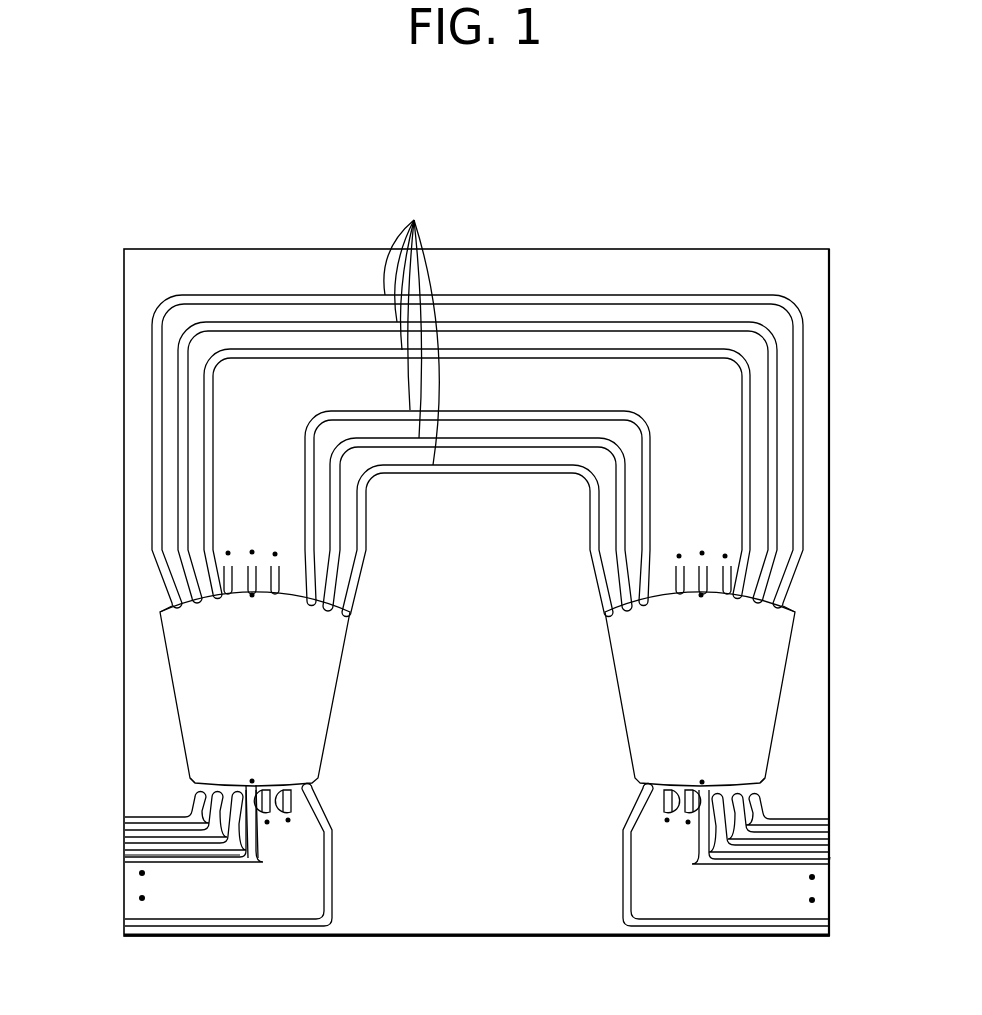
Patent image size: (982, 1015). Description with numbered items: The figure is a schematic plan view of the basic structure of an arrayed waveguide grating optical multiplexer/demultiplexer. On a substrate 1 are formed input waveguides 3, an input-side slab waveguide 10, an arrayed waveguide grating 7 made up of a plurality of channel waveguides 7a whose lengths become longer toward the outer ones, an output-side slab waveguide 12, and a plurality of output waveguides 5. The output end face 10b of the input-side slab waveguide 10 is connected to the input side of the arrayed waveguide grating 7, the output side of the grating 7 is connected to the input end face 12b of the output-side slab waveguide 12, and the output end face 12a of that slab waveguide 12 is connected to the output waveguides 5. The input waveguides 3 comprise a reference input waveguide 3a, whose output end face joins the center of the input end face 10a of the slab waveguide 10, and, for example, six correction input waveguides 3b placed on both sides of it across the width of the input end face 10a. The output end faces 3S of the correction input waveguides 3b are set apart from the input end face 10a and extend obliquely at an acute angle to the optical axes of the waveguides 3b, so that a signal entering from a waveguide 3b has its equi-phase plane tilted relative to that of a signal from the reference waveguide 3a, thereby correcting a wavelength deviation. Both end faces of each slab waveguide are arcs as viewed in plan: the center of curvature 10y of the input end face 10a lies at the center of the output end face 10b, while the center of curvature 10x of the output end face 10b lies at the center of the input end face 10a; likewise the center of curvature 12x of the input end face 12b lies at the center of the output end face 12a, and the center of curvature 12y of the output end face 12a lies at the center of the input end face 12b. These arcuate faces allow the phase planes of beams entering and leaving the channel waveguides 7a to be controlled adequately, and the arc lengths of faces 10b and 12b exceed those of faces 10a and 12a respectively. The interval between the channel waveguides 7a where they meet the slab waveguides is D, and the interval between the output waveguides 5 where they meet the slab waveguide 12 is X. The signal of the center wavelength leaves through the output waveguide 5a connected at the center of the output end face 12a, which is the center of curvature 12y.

The substrate 1 is at (672, 263).
The input waveguides 3 is at (167, 935).
The reference input waveguide 3a is at (118, 857).
The correction input waveguides 3b is at (122, 923).
The output end faces of the correction input waveguides 3S is at (240, 782).
The output waveguides 5 is at (787, 939).
The output waveguide for the center wavelength 5a is at (830, 858).
The arrayed waveguide grating 7 is at (540, 276).
The channel waveguides 7a is at (411, 325).
The input-side slab waveguide 10 is at (152, 661).
The input end face of the input-side slab waveguide 10a is at (190, 780).
The output end face of the input-side slab waveguide 10b is at (170, 607).
The center of curvature of the output end face 10b 10x is at (252, 596).
The center of curvature of the input end face 10a 10y is at (252, 781).
The output-side slab waveguide 12 is at (800, 661).
The output end face of the output-side slab waveguide 12a is at (765, 784).
The input end face of the output-side slab waveguide 12b is at (790, 607).
The center of curvature of the input end face 12b 12x is at (701, 595).
The center of curvature of the output end face 12a 12y is at (702, 782).
The interval between the channel waveguides D is at (335, 627).
The interval between the output waveguides X is at (730, 777).